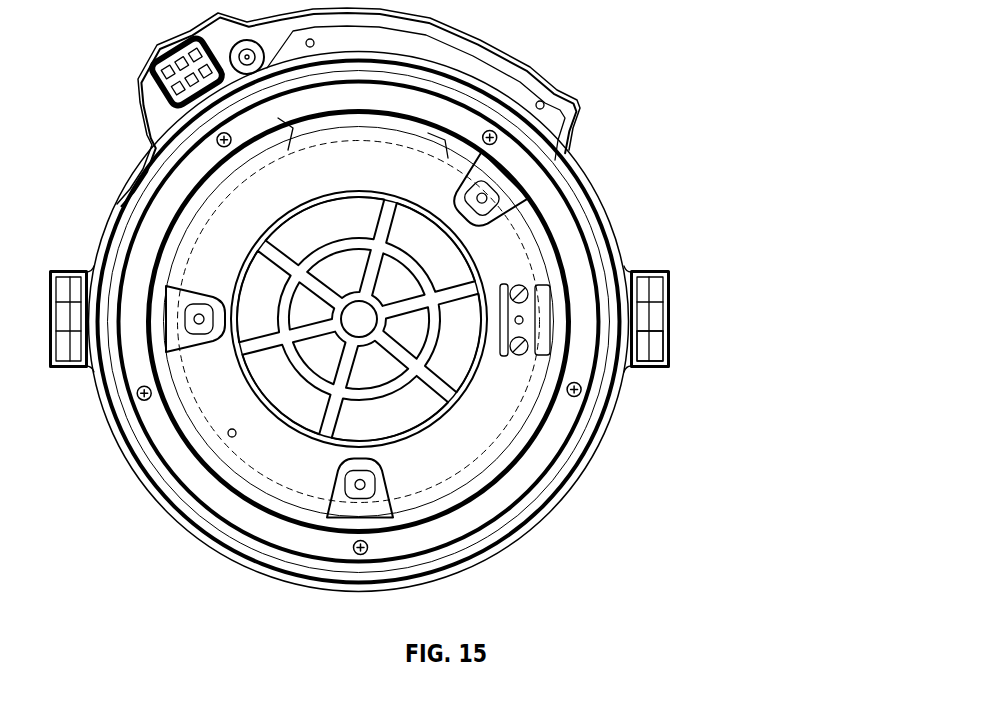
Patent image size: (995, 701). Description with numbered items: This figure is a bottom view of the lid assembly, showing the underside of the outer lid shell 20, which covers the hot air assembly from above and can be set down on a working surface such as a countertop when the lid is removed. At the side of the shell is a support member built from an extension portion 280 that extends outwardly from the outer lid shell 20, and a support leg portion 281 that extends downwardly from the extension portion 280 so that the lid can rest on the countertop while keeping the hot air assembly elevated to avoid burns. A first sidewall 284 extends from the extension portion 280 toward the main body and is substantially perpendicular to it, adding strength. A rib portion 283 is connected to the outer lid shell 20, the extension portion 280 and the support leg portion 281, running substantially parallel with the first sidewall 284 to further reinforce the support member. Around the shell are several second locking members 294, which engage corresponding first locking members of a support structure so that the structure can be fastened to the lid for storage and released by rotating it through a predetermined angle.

The outer lid shell 20 is at (617, 420).
The second locking member 294 is at (580, 152).
The first sidewall 284 is at (637, 273).
The rib portion 283 is at (670, 282).
The extension portion 280 is at (643, 322).
The support leg portion 281 is at (667, 343).